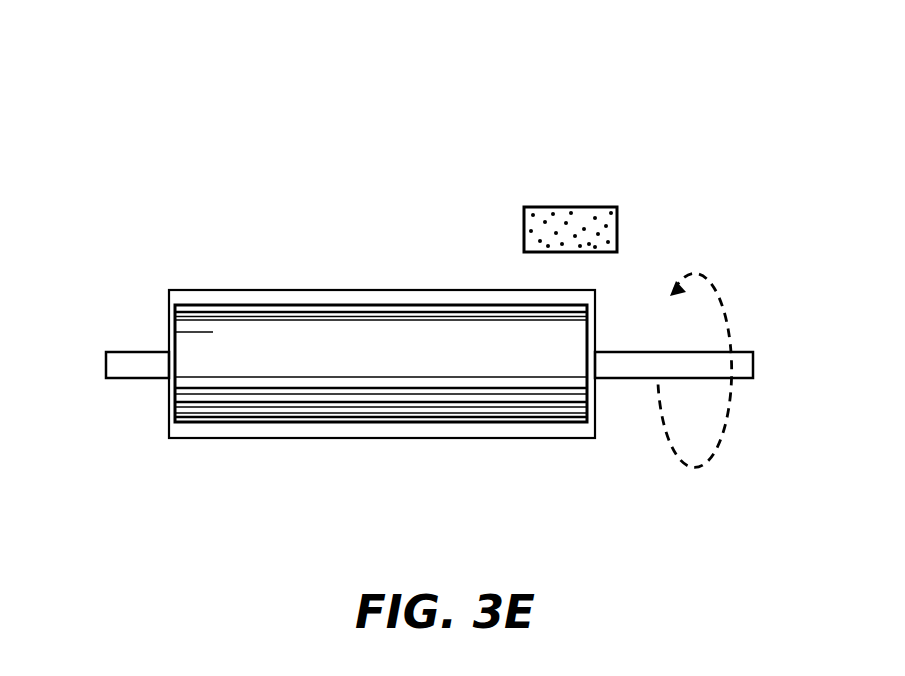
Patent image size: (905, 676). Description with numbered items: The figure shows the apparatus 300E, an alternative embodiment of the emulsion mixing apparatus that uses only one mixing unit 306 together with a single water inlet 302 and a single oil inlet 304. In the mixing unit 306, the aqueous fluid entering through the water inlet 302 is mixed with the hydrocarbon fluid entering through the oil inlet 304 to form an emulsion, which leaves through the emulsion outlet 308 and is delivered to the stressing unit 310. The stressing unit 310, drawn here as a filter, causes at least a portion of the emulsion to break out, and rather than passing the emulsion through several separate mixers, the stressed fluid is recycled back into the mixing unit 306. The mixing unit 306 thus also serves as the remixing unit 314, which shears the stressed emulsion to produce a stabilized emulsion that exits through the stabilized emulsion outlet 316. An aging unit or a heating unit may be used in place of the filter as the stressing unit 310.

The apparatus 300E is at (720, 57).
The water inlet 302 is at (195, 286).
The oil inlet 304 is at (166, 314).
The mixing unit 306 is at (574, 207).
The emulsion outlet 308 is at (574, 288).
The stressing unit 310 is at (607, 207).
The remixing unit 314 is at (595, 315).
The stabilized emulsion outlet 316 is at (143, 380).